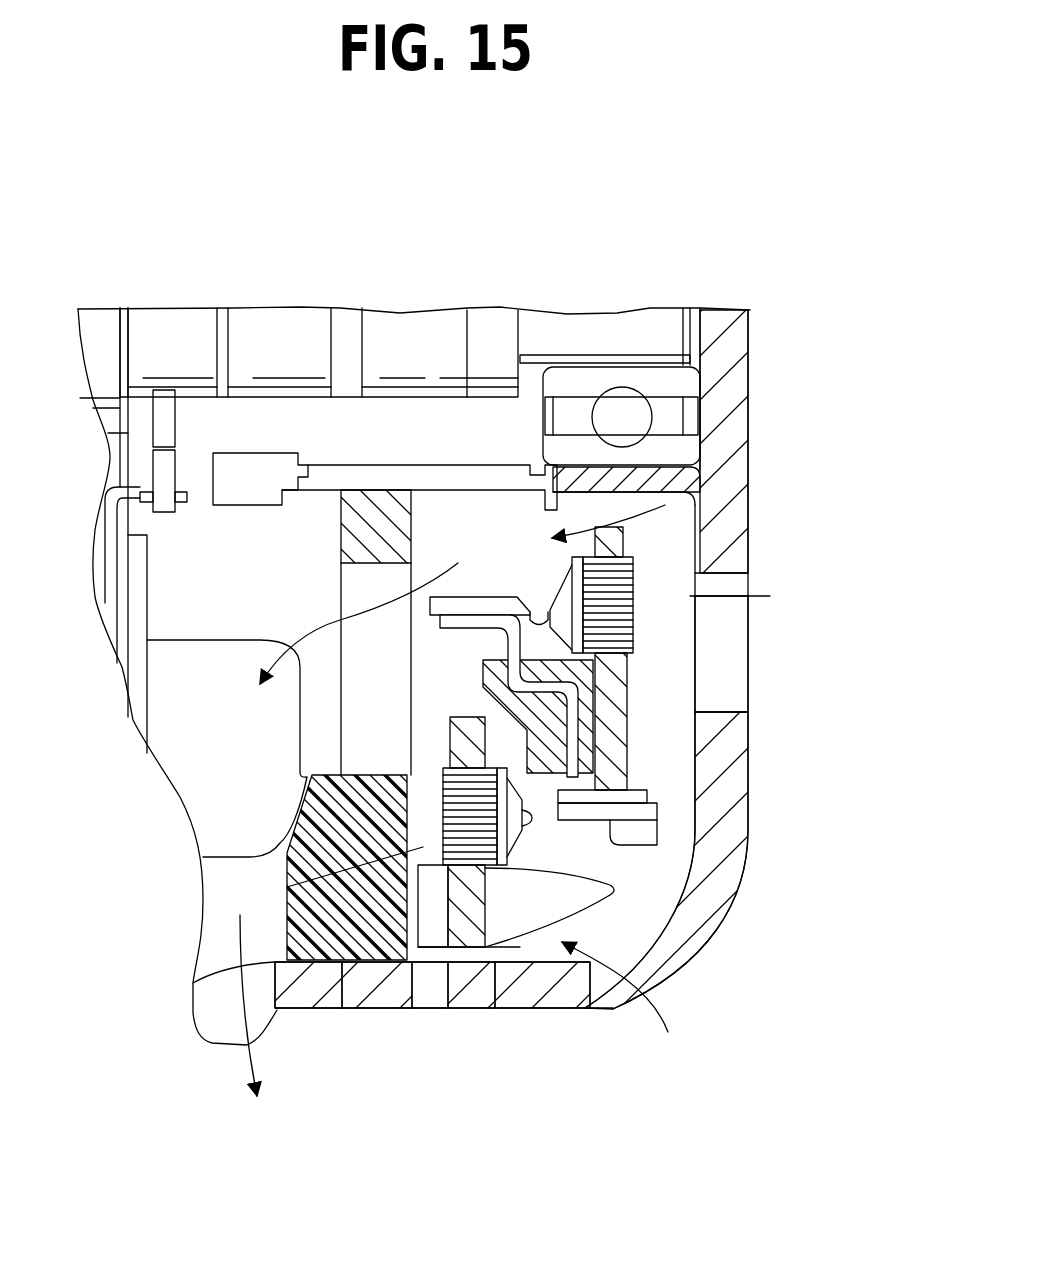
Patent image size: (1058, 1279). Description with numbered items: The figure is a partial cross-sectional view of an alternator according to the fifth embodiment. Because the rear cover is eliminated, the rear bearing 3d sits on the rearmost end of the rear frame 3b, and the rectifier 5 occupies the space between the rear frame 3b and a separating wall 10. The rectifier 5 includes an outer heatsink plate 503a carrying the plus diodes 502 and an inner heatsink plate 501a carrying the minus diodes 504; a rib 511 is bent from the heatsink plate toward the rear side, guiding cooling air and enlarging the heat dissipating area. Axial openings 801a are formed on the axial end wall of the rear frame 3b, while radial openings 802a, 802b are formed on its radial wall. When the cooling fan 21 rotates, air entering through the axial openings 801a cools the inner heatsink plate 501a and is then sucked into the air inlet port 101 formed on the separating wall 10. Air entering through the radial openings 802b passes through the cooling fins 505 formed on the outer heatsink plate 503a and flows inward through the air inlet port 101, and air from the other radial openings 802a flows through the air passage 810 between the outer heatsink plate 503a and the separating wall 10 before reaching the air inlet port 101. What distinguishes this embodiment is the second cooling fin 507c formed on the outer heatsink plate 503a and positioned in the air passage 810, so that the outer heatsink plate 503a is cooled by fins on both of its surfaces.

The rear bearing 3d is at (645, 385).
The rear frame 3b is at (728, 842).
The minus diodes 504 is at (548, 588).
The plus diodes 502 is at (512, 827).
The cooling fins 505 is at (570, 900).
The inner heatsink plate 501a is at (628, 727).
The axial openings 801a is at (735, 657).
The rib 511 is at (640, 840).
The outer heatsink plate 503a is at (470, 902).
The rectifier 5 is at (622, 1008).
The cooling fan 21 is at (183, 745).
The air inlet port 101 is at (345, 745).
The air passage 810 is at (287, 887).
The separating wall 10 is at (347, 942).
The second cooling fin 507c is at (388, 948).
The radial openings 802a is at (430, 992).
The radial openings 802b is at (565, 993).